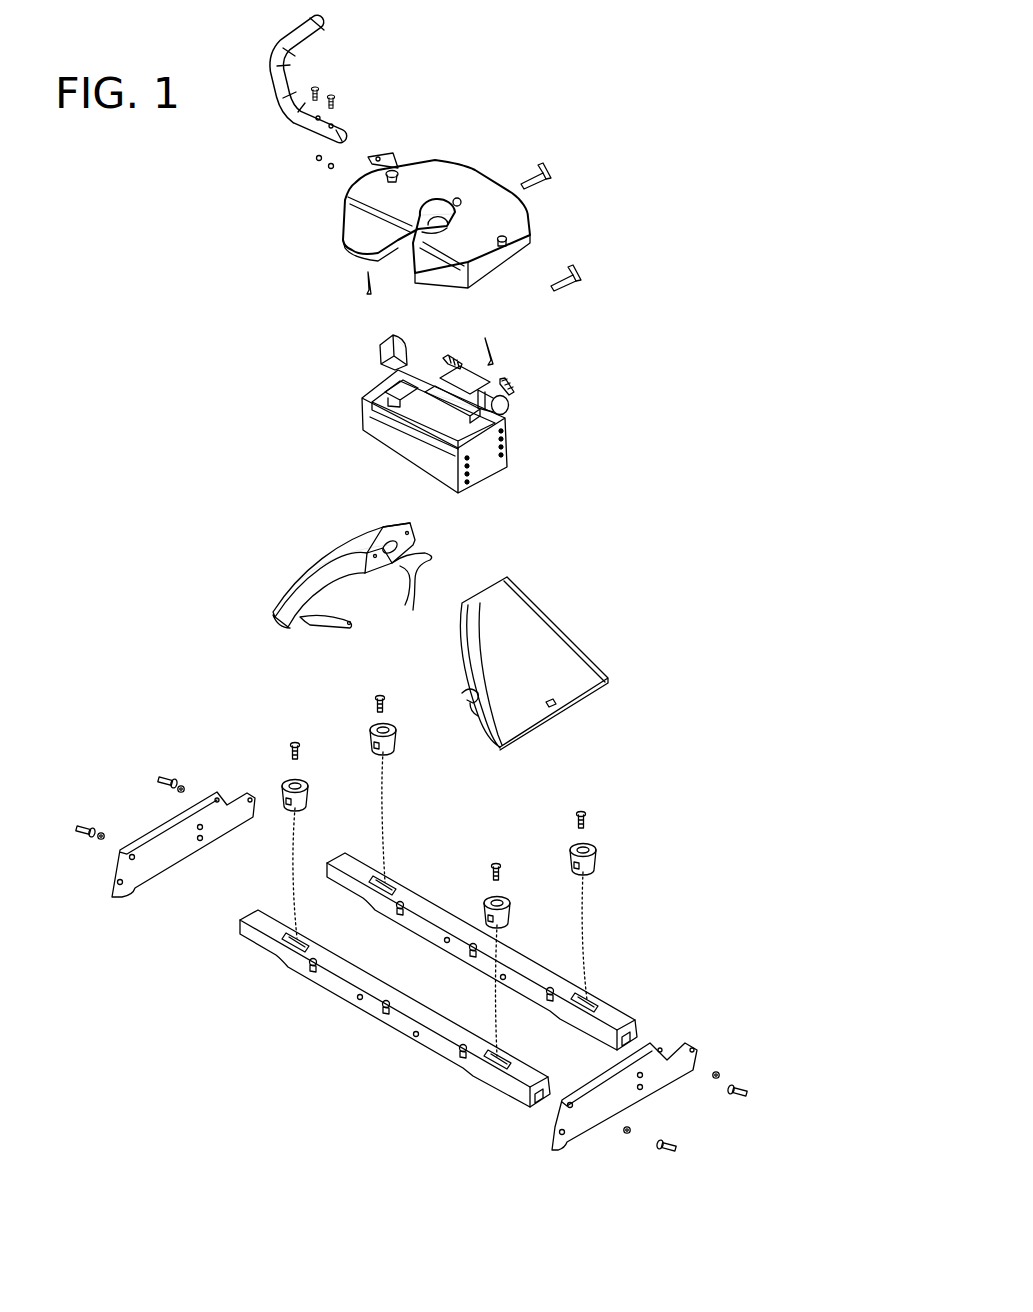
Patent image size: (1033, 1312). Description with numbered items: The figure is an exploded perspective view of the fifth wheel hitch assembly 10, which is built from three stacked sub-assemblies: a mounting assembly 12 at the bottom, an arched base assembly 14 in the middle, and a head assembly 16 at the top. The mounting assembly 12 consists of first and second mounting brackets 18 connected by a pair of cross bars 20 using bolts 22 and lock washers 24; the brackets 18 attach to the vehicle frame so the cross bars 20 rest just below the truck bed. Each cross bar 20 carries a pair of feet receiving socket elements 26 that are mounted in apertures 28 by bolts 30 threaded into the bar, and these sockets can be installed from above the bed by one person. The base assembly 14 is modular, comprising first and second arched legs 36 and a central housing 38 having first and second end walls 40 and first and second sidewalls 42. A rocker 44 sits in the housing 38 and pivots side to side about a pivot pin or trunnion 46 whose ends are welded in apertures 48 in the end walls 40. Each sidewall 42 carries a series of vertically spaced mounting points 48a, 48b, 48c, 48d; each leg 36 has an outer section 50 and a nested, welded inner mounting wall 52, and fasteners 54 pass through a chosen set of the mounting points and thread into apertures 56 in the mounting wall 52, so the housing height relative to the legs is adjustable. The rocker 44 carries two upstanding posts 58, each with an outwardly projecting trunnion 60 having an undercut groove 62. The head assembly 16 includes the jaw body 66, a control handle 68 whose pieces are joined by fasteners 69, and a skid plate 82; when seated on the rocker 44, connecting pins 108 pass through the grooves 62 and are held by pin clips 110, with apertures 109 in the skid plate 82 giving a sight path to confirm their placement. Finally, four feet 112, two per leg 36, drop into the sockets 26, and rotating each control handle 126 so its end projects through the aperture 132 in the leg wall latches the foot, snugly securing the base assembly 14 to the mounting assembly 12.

The fifth wheel hitch assembly 10 is at (712, 119).
The mounting assembly 12 is at (669, 893).
The arched base assembly 14 is at (621, 390).
The head assembly 16 is at (599, 191).
The mounting bracket 18 is at (155, 865).
The cross bar 20 is at (335, 990).
The bolt 22 is at (155, 781).
The lock washer 24 is at (185, 788).
The socket element 26 is at (396, 750).
The aperture 28 is at (390, 878).
The bolt 30 is at (375, 701).
The arched leg 36 is at (300, 582).
The central housing 38 is at (465, 490).
The end wall 40 is at (370, 432).
The sidewall 42 is at (488, 465).
The rocker 44 is at (378, 406).
The pivot pin or trunnion 46 is at (447, 410).
The apertures / mounting points 48 is at (443, 412).
The mounting point 48a is at (503, 430).
The mounting point 48b is at (503, 439).
The mounting point 48c is at (503, 447).
The mounting point 48d is at (503, 455).
The outer section 50 is at (280, 598).
The inner section or mounting wall 52 is at (368, 575).
The fastener 54 is at (430, 380).
The aperture 56 is at (403, 550).
The upstanding post 58 is at (385, 370).
The trunnion 60 is at (380, 338).
The undercut groove 62 is at (388, 360).
The jaw body 66 is at (416, 245).
The control handle 68 is at (277, 48).
The fastener 69 is at (333, 95).
The skid plate 82 is at (345, 214).
The connecting pin 108 is at (540, 170).
The aperture 109 is at (394, 170).
The pin clip 110 is at (366, 287).
The foot 112 is at (287, 628).
The control handle 126 is at (408, 598).
The aperture 132 is at (553, 706).